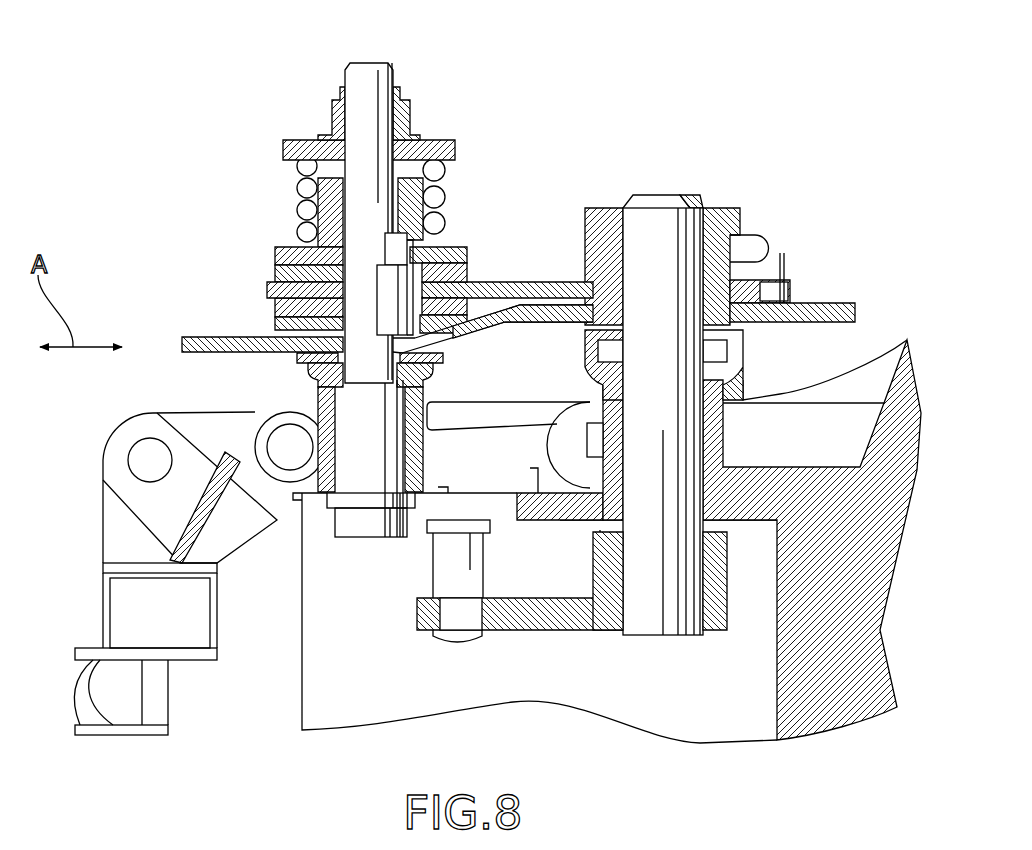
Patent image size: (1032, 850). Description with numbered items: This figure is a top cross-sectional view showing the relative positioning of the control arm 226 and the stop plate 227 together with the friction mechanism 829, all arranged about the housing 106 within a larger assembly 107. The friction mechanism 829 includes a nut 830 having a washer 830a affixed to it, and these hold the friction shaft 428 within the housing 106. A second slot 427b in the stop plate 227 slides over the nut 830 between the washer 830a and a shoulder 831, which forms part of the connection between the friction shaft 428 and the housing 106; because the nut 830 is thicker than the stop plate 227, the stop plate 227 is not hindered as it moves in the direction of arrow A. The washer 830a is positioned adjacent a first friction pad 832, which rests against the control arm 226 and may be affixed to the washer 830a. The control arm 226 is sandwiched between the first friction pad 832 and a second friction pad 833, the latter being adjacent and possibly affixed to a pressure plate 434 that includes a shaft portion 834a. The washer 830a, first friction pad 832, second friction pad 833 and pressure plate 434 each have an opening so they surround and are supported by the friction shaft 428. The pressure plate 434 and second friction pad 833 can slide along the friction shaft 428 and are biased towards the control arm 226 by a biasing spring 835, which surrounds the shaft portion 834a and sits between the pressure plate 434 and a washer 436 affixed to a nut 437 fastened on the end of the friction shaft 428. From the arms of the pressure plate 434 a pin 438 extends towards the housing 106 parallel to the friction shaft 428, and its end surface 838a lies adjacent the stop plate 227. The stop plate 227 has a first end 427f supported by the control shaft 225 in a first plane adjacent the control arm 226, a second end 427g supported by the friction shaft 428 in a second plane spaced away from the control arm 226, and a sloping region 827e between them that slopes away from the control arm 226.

The housing 106 is at (120, 532).
The housing body 107 is at (770, 160).
The control shaft 225 is at (682, 195).
The control arm 226 is at (505, 293).
The stop plate 227 is at (835, 302).
The second slot 427b is at (297, 358).
The first end 427f is at (840, 323).
The second end 427g is at (273, 338).
The friction shaft 428 is at (383, 60).
The pressure plate 434 is at (322, 216).
The washer 436 is at (293, 150).
The nut 437 is at (337, 117).
The pin 438 is at (402, 285).
The sloping region 827e is at (497, 323).
The friction mechanism 829 is at (466, 208).
The nut 830 is at (308, 375).
The washer 830a is at (268, 300).
The shoulder 831 is at (420, 373).
The first friction pad 832 is at (268, 282).
The second friction pad 833 is at (270, 255).
The shaft portion 834a is at (302, 207).
The biasing spring 835 is at (447, 174).
The end surface 838a is at (380, 338).